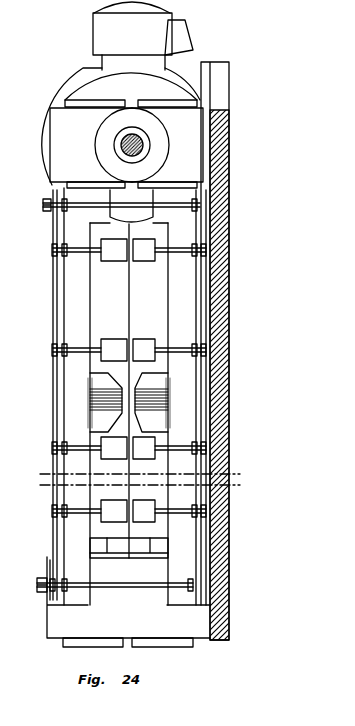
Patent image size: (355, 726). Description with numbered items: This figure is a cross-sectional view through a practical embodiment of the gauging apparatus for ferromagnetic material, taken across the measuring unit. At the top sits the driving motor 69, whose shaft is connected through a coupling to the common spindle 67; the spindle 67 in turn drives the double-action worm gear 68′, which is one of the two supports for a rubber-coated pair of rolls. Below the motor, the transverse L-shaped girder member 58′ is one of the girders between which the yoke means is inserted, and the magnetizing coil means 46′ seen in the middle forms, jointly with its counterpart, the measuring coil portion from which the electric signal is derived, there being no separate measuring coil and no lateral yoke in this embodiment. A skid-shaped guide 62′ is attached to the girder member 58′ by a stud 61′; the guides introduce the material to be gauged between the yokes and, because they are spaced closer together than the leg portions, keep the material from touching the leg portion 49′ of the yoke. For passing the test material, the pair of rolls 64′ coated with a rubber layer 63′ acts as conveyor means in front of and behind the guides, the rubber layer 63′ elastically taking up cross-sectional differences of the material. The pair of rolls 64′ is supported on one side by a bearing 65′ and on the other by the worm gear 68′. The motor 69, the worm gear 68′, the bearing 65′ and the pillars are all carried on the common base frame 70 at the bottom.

The driving motor 69 is at (58, 100).
The double-action worm gear 68′ is at (62, 171).
The common spindle 67 is at (147, 150).
The common base frame 70 is at (216, 587).
The transverse L-shaped girder member 58′ is at (72, 462).
The rubber layer 63′ is at (98, 318).
The pair of rolls 64′ is at (82, 544).
The stud 61′ is at (78, 251).
The skid-shaped guide 62′ is at (110, 258).
The magnetizing coil means 46′ is at (93, 380).
The leg portion 49′ is at (90, 403).
The bearing 65′ is at (95, 640).